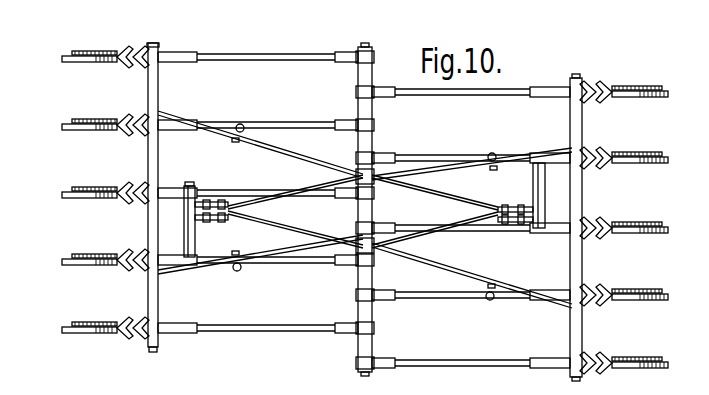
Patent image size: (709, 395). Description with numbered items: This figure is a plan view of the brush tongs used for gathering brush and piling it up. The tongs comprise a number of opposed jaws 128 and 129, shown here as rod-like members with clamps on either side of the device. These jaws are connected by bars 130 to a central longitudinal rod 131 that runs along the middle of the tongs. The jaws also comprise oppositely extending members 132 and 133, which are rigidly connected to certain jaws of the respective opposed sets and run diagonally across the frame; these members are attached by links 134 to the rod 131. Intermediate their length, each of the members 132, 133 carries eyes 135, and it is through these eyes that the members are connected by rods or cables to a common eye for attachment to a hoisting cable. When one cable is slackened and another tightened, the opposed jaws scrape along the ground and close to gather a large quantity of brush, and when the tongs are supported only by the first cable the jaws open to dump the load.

The opposed jaws 128 is at (667, 168).
The opposed jaws 129 is at (72, 200).
The bars 130 is at (273, 263).
The central longitudinal rod 131 is at (358, 376).
The oppositely extending member 132 is at (289, 152).
The oppositely extending member 133 is at (444, 166).
The links 134 is at (356, 177).
The eyes 135 is at (241, 124).